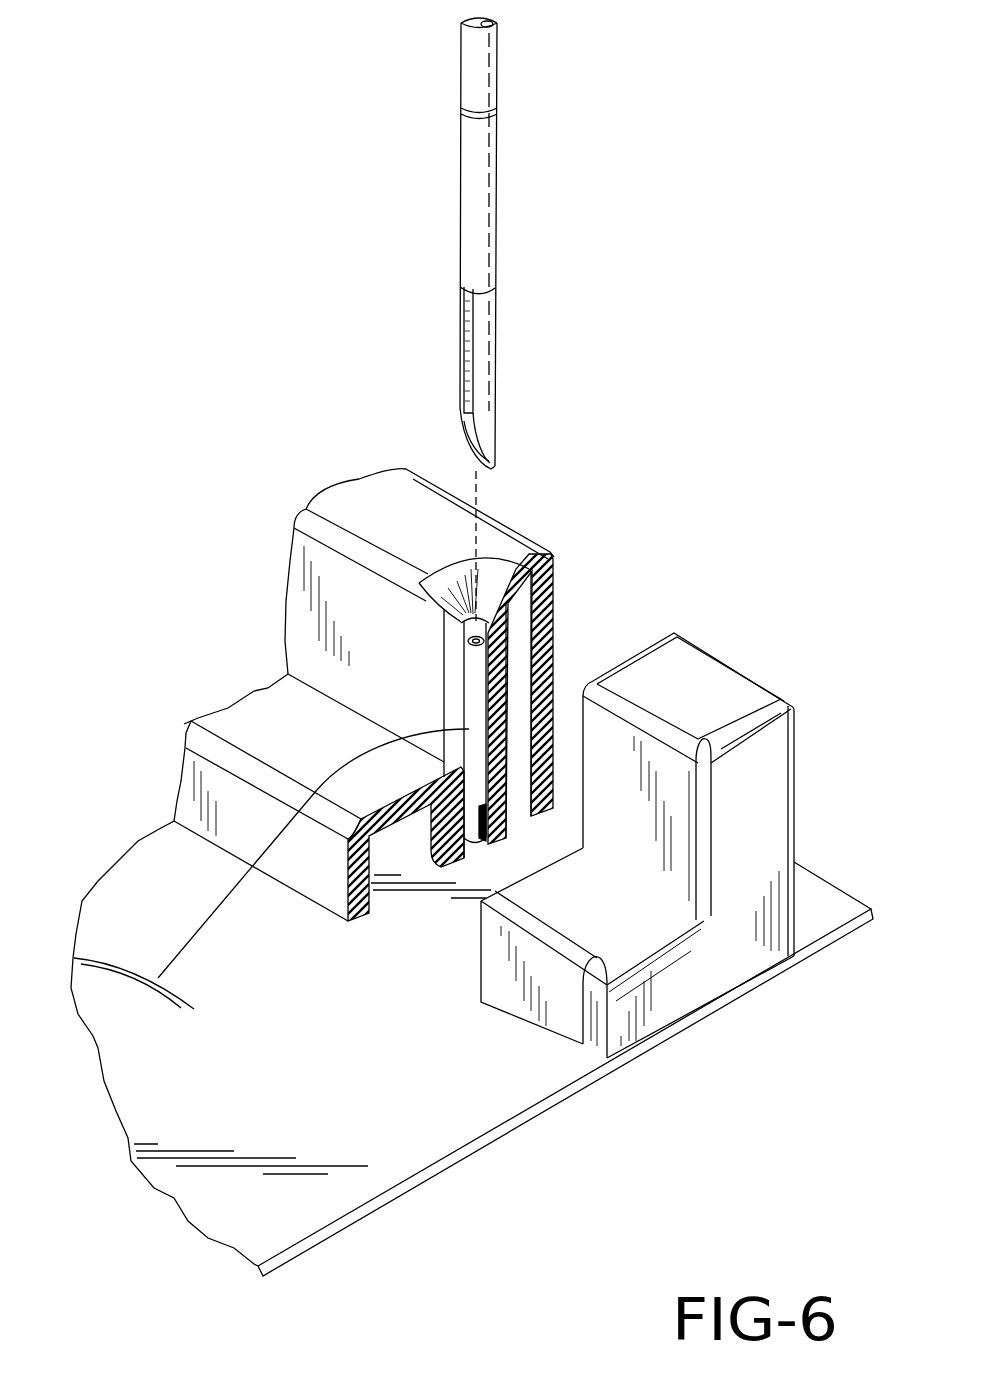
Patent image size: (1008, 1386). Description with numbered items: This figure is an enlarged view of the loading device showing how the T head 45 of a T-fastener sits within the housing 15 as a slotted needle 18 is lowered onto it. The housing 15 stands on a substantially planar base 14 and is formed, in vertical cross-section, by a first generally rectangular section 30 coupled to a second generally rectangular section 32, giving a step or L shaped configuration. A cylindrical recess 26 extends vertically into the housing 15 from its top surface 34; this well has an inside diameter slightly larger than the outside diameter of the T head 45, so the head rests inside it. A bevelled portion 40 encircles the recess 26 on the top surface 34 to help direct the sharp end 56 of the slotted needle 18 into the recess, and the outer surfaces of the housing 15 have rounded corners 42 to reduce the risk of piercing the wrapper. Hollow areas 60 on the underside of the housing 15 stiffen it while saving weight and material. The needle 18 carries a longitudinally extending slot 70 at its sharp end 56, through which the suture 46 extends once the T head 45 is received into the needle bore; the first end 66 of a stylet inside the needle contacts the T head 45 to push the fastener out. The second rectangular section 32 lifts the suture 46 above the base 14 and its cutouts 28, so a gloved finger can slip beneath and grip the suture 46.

The base 14 is at (822, 902).
The housing 15 is at (748, 768).
The slotted needle 18 is at (480, 188).
The cylindrical recess 26 is at (489, 590).
The cutouts 28 is at (117, 961).
The first generally rectangular section 30 is at (748, 823).
The second generally rectangular section 32 is at (677, 997).
The top surface 34 is at (705, 672).
The bevelled portion 40 is at (455, 572).
The rounded corners 42 is at (322, 527).
The T head 45 is at (472, 685).
The suture 46 is at (215, 906).
The sharp end 56 is at (488, 469).
The hollow areas 60 is at (520, 630).
The first end of the stylet 66 is at (463, 340).
The longitudinally extending slot 70 is at (460, 403).